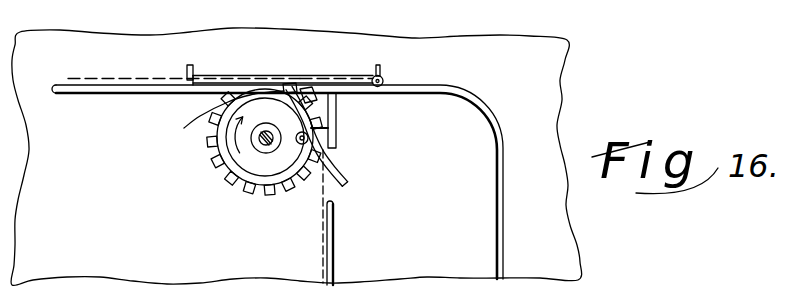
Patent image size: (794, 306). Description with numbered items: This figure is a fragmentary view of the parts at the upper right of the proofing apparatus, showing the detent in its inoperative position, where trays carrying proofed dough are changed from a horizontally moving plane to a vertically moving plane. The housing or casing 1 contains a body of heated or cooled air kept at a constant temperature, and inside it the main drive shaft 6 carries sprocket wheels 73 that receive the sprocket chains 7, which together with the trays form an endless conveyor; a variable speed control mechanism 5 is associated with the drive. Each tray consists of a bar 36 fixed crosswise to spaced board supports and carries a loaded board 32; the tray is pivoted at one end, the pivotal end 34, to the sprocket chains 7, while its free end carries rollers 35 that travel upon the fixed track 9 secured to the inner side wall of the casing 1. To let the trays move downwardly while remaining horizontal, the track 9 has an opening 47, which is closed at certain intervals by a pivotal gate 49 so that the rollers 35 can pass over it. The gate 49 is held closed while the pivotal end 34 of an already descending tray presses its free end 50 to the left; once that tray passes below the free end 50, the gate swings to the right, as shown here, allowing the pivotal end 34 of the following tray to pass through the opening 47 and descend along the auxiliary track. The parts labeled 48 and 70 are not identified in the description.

The housing or casing 1 is at (568, 237).
The variable speed control mechanism 5 is at (350, 78).
The main drive shaft 6 is at (262, 152).
The sprocket chains 7 is at (75, 78).
The tracks 9 is at (117, 93).
The boards 32 is at (232, 64).
The pivotal end of tray 34 is at (192, 77).
The rollers 35 is at (382, 82).
The bar 36 is at (189, 68).
The openings 47 is at (308, 85).
The ratchet wheel 48 is at (303, 103).
The pivotal gate 49 is at (215, 148).
The free end of gate 50 is at (347, 174).
The stop plate 70 is at (348, 227).
The sprocket wheels 73 is at (270, 174).